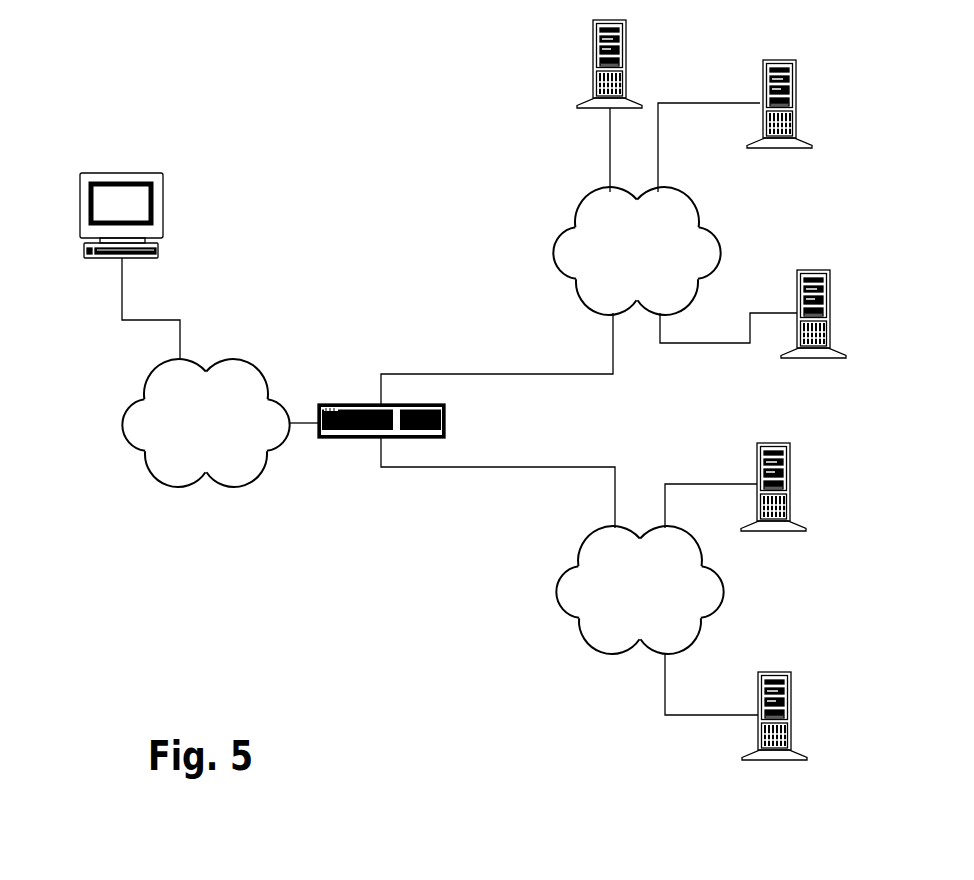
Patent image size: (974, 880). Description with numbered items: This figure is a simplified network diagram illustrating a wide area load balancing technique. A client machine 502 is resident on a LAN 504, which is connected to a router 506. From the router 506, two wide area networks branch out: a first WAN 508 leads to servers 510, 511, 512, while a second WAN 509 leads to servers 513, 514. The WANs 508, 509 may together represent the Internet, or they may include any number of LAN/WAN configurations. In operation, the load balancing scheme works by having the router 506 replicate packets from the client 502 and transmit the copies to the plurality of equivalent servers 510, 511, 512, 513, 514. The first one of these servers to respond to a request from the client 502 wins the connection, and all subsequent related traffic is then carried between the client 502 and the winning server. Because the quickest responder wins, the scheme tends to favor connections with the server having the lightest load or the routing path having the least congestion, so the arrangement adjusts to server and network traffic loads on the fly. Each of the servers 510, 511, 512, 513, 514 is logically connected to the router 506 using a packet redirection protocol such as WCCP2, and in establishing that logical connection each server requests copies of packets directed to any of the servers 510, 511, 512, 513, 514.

The client machine 502 is at (163, 205).
The LAN 504 is at (228, 360).
The router 506 is at (345, 436).
The WAN 508 is at (555, 250).
The WAN 509 is at (558, 590).
The server 510 is at (593, 62).
The server 511 is at (797, 95).
The server 512 is at (830, 300).
The server 513 is at (790, 480).
The server 514 is at (790, 712).